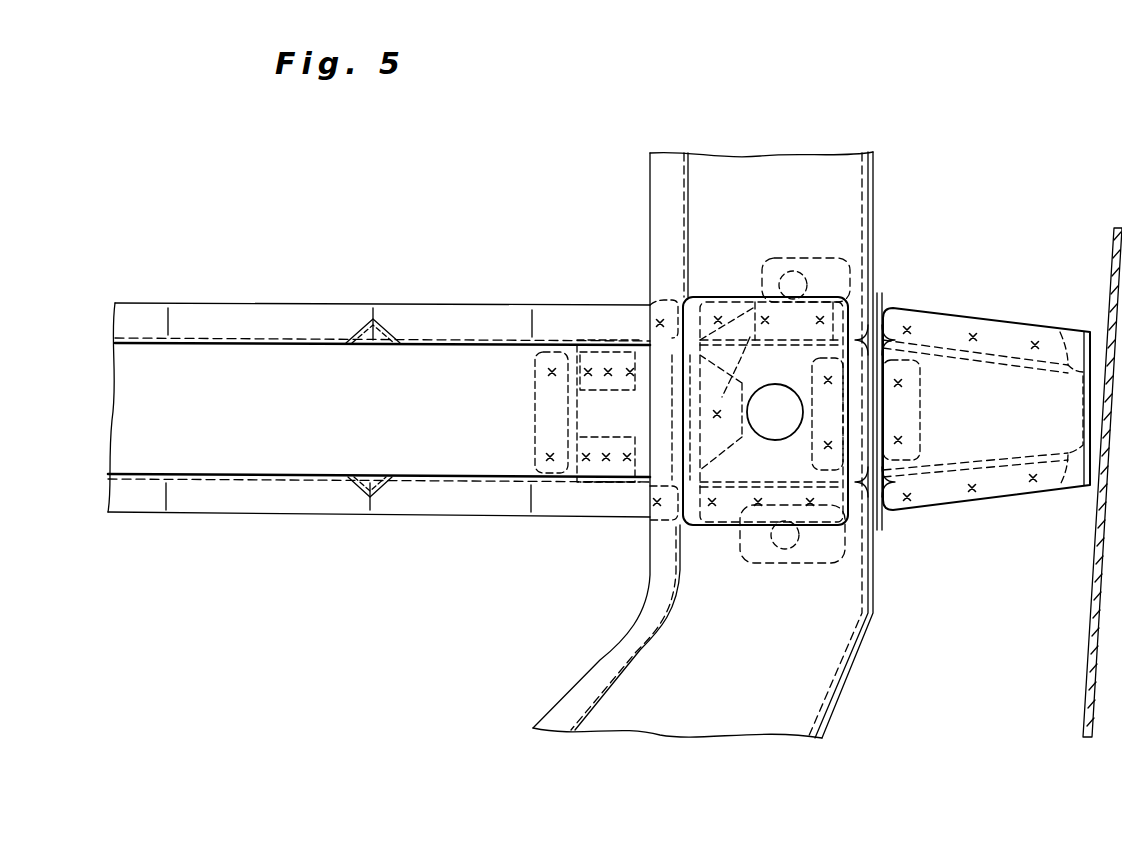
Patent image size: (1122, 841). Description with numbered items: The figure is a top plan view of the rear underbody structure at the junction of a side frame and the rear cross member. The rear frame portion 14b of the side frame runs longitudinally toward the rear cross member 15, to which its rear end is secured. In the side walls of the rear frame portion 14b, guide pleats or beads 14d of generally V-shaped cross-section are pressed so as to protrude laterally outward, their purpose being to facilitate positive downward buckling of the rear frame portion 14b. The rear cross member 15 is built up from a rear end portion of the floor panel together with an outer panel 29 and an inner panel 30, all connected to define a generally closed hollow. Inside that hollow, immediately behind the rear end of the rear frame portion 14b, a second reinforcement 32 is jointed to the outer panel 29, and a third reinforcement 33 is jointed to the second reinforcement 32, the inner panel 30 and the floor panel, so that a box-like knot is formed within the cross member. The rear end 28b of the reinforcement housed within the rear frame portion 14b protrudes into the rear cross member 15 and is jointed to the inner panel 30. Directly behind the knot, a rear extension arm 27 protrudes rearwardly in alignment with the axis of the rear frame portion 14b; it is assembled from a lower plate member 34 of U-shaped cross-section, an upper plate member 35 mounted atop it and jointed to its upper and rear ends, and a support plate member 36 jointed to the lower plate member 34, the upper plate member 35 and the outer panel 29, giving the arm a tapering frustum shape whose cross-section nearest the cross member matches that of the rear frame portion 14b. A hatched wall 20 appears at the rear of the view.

The rear frame portion 14b is at (272, 520).
The guide pleat or bead 14d is at (370, 478).
The rear cross member 15 is at (880, 228).
The outer panel 29 is at (875, 177).
The inner panel 30 is at (705, 183).
The third reinforcement 33 is at (720, 307).
The rear end of reinforcement 28b is at (775, 398).
The second reinforcement 32 is at (853, 447).
The lower plate member 34 is at (880, 302).
The upper plate member 35 is at (1000, 365).
The support plate member 36 is at (880, 412).
The rear extension arm 27 is at (960, 515).
The floor panel 20 is at (1097, 597).